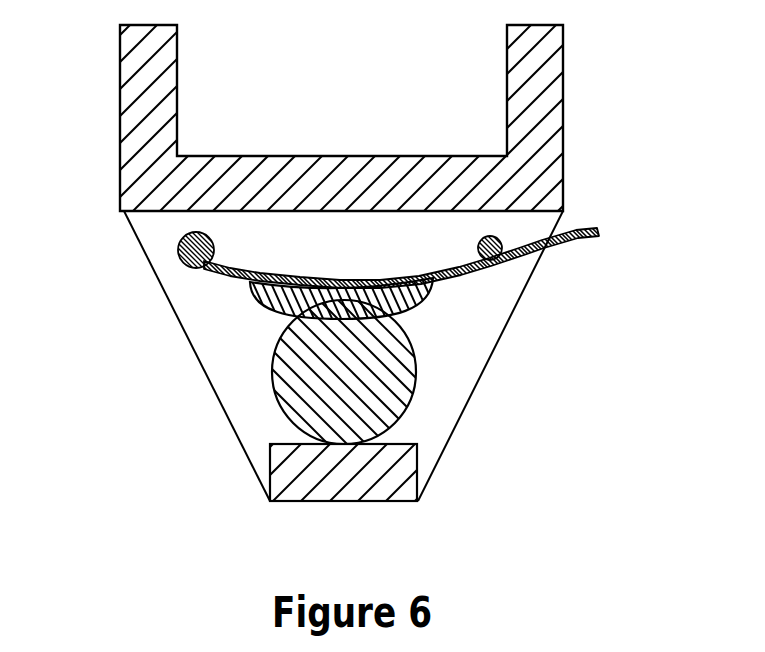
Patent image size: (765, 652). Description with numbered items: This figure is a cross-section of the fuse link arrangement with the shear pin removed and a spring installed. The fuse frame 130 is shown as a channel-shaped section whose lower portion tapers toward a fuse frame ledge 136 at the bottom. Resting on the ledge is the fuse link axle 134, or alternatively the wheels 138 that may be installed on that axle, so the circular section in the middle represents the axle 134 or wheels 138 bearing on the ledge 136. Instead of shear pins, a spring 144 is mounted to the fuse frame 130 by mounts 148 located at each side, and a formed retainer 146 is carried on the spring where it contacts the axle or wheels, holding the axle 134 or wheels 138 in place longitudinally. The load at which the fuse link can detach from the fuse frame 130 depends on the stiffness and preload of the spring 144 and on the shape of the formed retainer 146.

The fuse frame 130 is at (528, 292).
The fuse link axle 134 is at (429, 372).
The wheels 138 is at (413, 362).
The fuse frame ledge 136 is at (288, 485).
The spring 144 is at (359, 278).
The formed retainer 146 is at (273, 307).
The mounts 148 is at (170, 258).